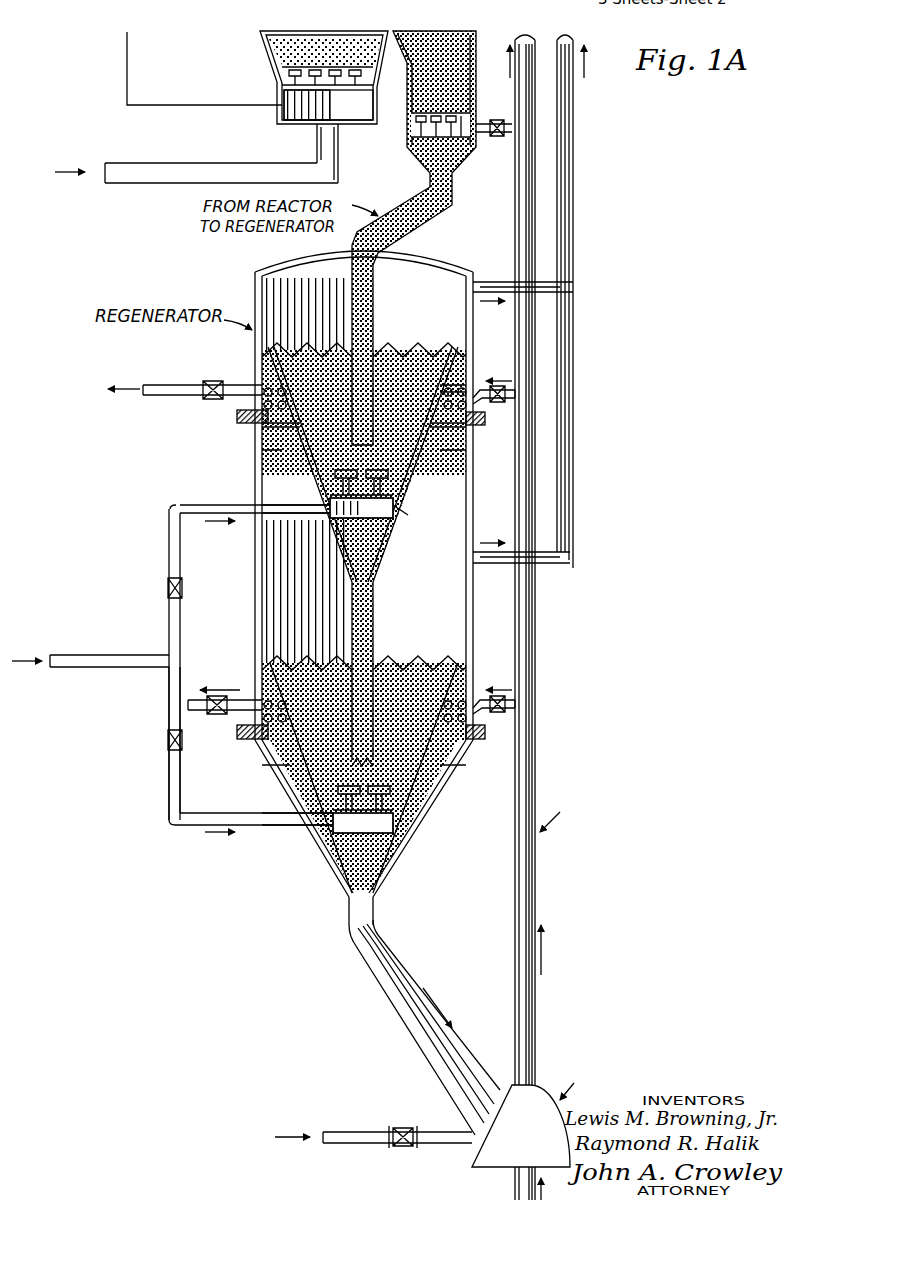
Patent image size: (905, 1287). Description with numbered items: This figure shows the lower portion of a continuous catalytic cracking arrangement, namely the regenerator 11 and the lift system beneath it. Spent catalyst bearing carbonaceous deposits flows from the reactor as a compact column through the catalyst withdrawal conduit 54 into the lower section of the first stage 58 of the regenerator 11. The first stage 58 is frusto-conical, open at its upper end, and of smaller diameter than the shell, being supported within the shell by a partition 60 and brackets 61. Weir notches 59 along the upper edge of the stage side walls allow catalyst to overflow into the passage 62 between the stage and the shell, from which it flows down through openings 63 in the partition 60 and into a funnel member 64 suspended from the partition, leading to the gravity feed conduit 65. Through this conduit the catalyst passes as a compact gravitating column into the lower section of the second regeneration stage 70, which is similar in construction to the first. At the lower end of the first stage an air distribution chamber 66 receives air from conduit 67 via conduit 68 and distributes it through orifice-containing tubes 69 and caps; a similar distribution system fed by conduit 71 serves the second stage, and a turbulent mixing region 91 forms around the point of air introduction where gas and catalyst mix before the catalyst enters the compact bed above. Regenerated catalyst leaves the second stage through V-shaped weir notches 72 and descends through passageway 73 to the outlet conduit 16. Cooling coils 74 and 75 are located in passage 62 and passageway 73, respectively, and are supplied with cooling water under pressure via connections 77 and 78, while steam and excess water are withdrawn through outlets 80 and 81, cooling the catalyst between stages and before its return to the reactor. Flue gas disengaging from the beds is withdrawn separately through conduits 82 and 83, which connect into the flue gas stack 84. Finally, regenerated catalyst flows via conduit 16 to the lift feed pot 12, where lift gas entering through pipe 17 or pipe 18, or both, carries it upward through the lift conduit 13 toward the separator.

The regenerator 11 is at (256, 290).
The lift feed pot 12 is at (587, 1115).
The lift conduit 13 is at (532, 630).
The conduit 16 is at (388, 992).
The pipe 17 is at (512, 1180).
The pipe 18 is at (372, 1130).
The catalyst withdrawal conduit 54 is at (436, 212).
The first stage 58 is at (466, 388).
The weir notches 59 is at (432, 350).
The partition 60 is at (258, 446).
The brackets 61 is at (258, 458).
The passage 62 is at (442, 462).
The openings 63 is at (440, 438).
The funnel member 64 is at (400, 508).
The gravity feed conduit 65 is at (376, 614).
The air distribution chamber 66 is at (408, 515).
The conduit 67 is at (115, 668).
The conduit 68 is at (168, 545).
The orifice-containing tubes 69 is at (395, 503).
The second regeneration stage 70 is at (330, 500).
The conduit 71 is at (168, 782).
The V-shaped weir notches 72 is at (430, 663).
The passageway 73 is at (445, 752).
The cooling coils 74 is at (468, 404).
The cooling coils 75 is at (468, 690).
The connection 77 is at (504, 405).
The connection 78 is at (508, 703).
The outlet 80 is at (226, 385).
The outlet 81 is at (200, 712).
The conduit 82 is at (506, 280).
The conduit 83 is at (503, 565).
The flue gas stack 84 is at (562, 238).
The turbulent mixing region 91 is at (345, 784).